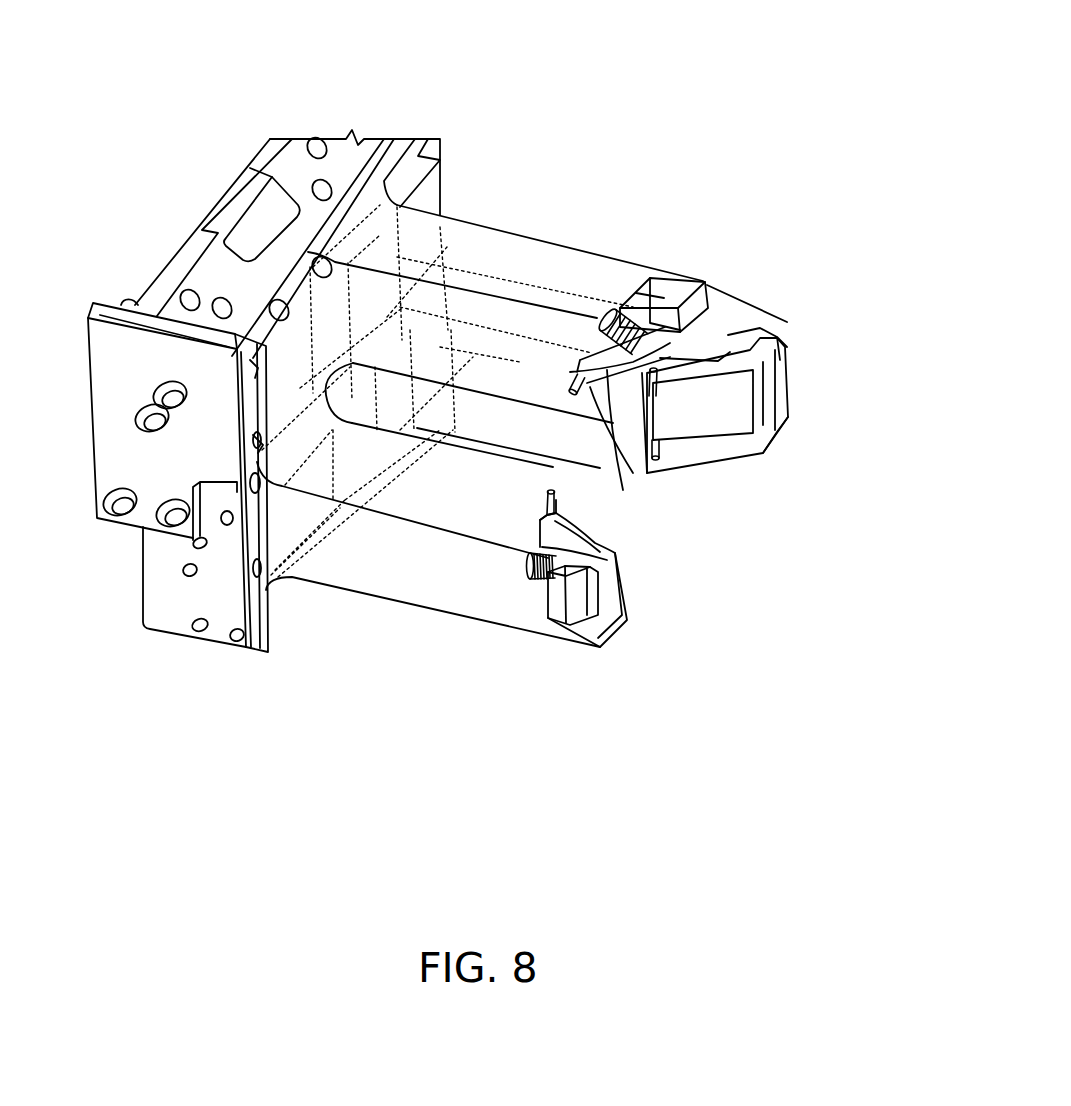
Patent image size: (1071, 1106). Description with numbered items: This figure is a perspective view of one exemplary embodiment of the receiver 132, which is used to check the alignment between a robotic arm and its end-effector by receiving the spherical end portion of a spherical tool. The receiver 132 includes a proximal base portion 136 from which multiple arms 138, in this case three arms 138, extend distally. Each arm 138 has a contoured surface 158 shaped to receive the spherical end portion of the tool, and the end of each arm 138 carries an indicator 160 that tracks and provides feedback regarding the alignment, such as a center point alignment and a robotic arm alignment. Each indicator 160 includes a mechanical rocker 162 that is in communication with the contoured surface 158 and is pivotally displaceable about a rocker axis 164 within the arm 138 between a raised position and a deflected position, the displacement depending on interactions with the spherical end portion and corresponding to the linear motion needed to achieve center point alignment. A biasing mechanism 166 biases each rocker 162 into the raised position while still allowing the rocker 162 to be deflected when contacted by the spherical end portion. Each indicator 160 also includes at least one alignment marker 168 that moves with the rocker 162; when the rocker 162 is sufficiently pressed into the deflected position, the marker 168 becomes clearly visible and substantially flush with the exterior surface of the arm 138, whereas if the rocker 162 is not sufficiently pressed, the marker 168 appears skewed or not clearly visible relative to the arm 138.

The receiver 132 is at (591, 108).
The proximal base portion 136 is at (160, 603).
The arm 138 is at (470, 244).
The contoured surface 158 is at (778, 442).
The indicator 160 is at (653, 268).
The mechanical rocker 162 is at (595, 360).
The rocker axis 164 is at (573, 381).
The biasing mechanism 166 is at (600, 306).
The alignment marker 168 is at (700, 288).